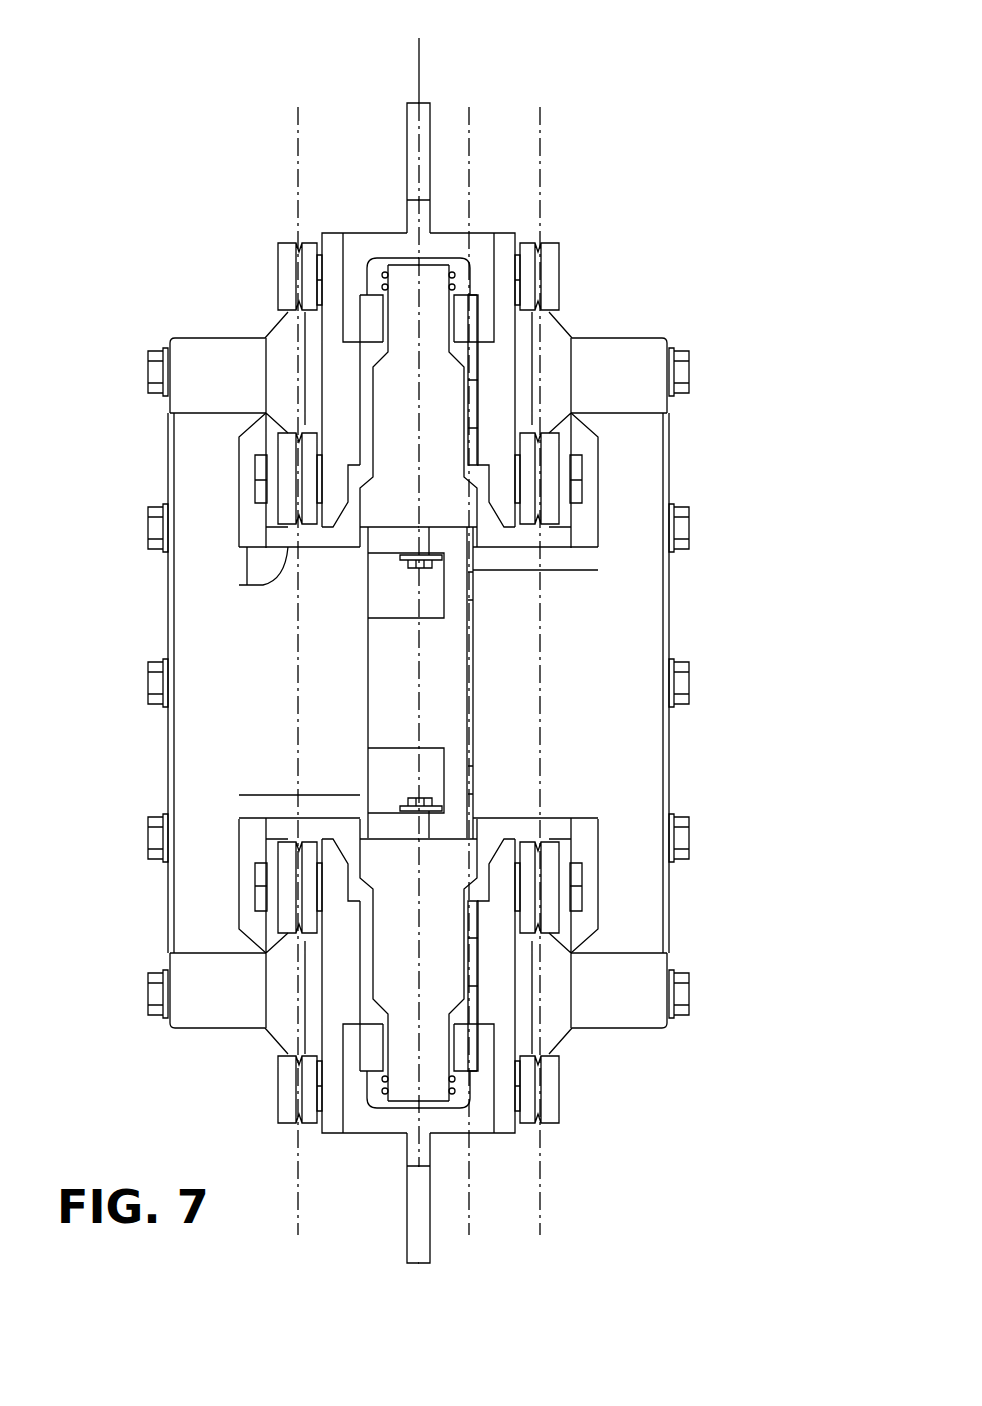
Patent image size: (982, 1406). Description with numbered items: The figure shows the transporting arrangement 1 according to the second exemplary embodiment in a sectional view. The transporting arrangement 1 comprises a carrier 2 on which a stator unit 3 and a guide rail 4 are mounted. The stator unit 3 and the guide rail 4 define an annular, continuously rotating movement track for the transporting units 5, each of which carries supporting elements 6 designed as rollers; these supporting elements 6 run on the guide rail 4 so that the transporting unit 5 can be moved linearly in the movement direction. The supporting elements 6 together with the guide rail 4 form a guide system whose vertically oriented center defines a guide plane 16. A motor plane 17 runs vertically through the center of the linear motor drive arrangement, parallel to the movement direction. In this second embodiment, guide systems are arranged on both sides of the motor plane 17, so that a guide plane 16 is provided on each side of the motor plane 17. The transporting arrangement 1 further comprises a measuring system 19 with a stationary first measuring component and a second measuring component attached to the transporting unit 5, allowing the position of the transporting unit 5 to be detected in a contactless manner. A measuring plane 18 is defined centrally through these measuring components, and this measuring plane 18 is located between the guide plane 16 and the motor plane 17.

The transporting arrangement 1 is at (657, 252).
The carrier 2 is at (640, 630).
The stator unit 3 is at (435, 325).
The guide rail 4 is at (285, 335).
The transporting unit 5 is at (377, 245).
The supporting elements 6 is at (285, 262).
The guide plane 16 is at (298, 143).
The motor plane 17 is at (415, 60).
The measuring plane 18 is at (468, 132).
The measuring system 19 is at (470, 441).